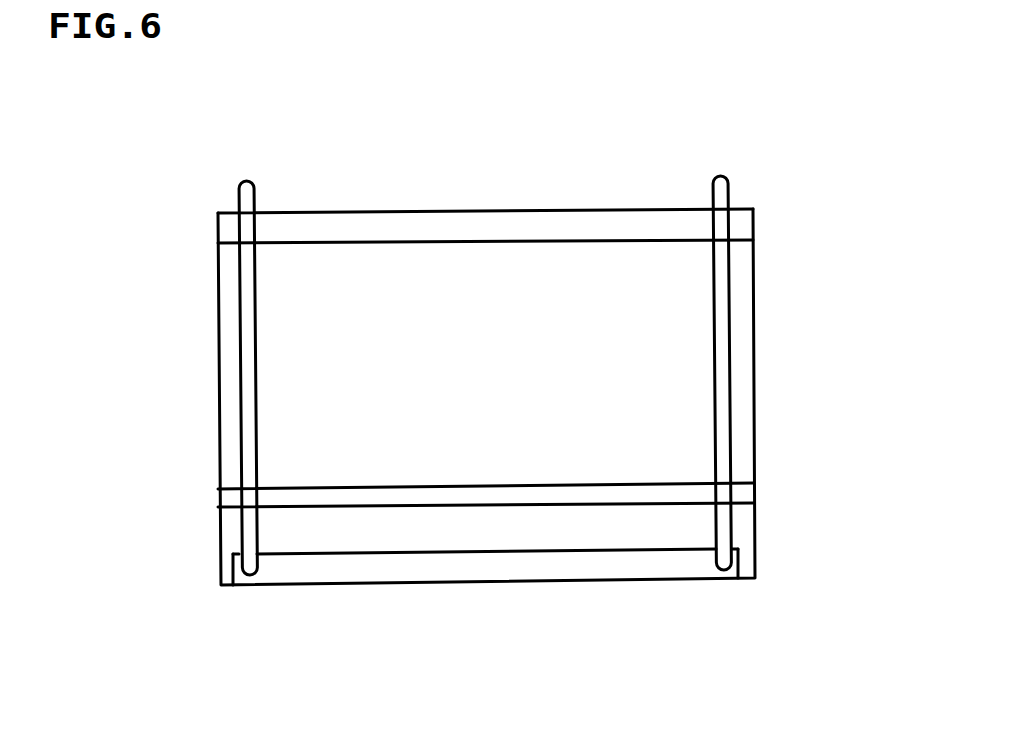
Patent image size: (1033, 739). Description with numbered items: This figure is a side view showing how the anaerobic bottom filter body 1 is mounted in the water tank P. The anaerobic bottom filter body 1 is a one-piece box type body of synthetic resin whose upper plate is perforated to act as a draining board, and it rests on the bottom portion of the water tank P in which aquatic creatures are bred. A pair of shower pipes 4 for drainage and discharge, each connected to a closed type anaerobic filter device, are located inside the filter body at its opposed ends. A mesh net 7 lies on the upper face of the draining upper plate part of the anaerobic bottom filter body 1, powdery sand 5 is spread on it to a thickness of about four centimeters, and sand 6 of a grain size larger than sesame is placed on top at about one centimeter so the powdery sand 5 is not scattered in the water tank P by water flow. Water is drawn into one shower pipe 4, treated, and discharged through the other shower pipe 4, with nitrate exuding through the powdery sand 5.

The anaerobic bottom filter body 1 is at (638, 563).
The water tank P is at (471, 211).
The shower pipe 4 is at (252, 362).
The powdery sand 5 is at (682, 530).
The sand 6 is at (643, 489).
The mesh net 7 is at (428, 552).